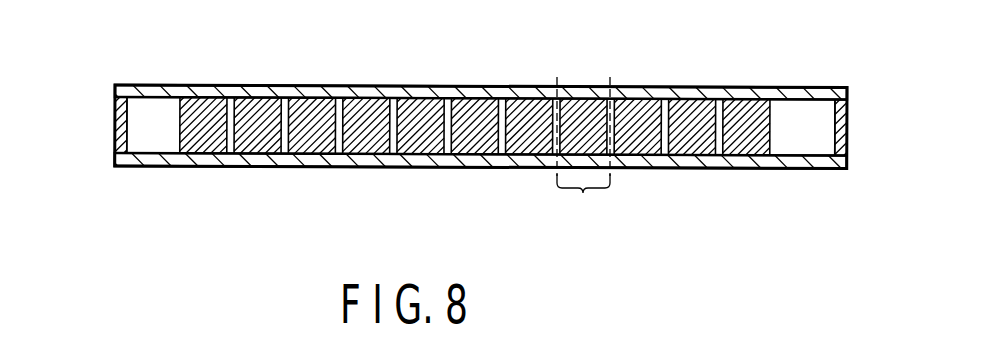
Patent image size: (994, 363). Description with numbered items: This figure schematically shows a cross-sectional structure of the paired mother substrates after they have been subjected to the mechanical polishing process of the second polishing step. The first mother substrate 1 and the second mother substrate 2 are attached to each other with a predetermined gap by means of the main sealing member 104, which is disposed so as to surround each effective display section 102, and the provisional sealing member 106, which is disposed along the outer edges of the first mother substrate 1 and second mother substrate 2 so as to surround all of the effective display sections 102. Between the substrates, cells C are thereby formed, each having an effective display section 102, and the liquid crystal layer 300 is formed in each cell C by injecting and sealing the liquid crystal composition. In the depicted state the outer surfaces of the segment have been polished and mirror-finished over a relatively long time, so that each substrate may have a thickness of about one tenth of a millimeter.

The first mother substrate 1 is at (847, 163).
The second mother substrate 2 is at (847, 94).
The provisional sealing member 106 is at (115, 133).
The main sealing member 104 is at (303, 118).
The effective display section 102 is at (590, 102).
The liquid crystal layer 300 is at (748, 138).
The cell C is at (583, 155).